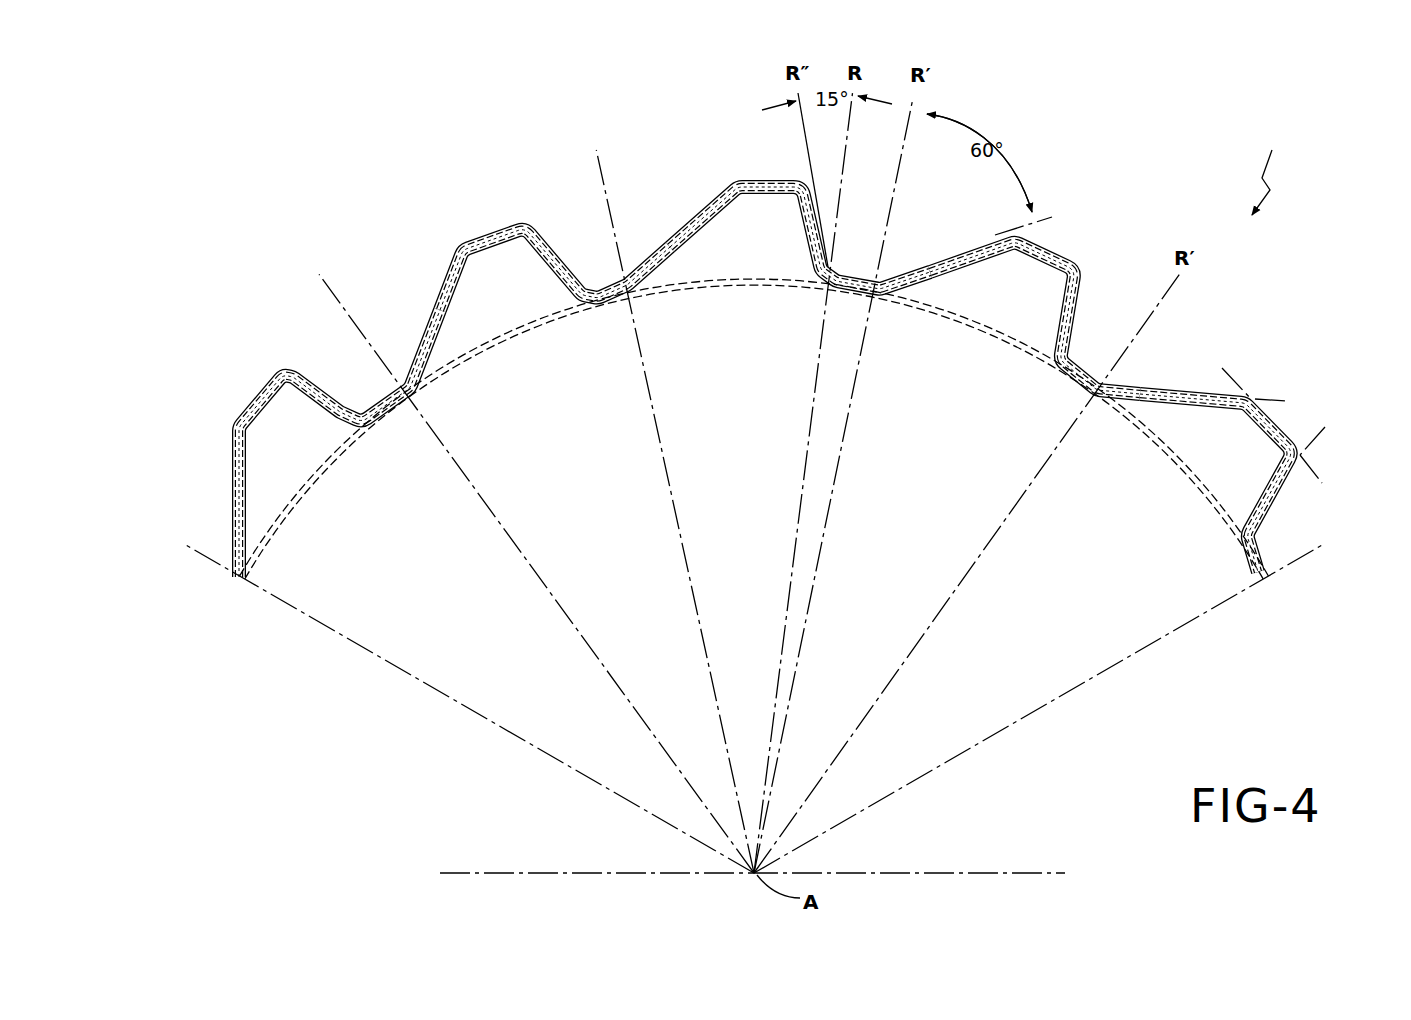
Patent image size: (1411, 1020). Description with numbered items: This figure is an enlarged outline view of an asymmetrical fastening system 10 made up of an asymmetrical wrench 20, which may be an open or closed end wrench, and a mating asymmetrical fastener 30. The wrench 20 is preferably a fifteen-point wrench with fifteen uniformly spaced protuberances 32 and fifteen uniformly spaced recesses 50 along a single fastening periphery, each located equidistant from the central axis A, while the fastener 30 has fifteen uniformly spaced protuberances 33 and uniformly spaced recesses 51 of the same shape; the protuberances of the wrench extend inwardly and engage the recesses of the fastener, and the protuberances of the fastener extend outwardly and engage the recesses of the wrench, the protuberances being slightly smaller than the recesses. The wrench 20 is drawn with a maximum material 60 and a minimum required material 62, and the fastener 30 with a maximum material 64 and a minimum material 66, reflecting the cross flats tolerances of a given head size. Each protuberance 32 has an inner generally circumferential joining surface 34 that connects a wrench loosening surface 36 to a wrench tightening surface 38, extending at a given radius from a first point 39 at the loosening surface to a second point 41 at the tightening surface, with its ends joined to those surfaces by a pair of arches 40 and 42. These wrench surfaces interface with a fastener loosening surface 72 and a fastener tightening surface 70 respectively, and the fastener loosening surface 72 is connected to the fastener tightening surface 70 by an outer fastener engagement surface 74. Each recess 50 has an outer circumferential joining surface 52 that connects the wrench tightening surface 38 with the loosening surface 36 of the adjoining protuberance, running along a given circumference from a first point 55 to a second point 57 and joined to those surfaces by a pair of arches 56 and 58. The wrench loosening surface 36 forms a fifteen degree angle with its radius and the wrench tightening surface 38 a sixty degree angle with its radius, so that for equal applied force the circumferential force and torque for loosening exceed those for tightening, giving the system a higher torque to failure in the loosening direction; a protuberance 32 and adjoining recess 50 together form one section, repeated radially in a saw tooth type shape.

The asymmetrical fastening system 10 is at (1271, 166).
The asymmetrical wrench 20 is at (346, 212).
The asymmetrical fastener 30 is at (501, 400).
The protuberance 32 is at (576, 247).
The protuberance 33 is at (486, 302).
The inner generally circumferential joining surface 34 is at (852, 283).
The wrench loosening surface 36 is at (818, 205).
The wrench tightening surface 38 is at (952, 256).
The first point 39 is at (832, 278).
The arch 40 is at (832, 273).
The second point 41 is at (895, 288).
The arch 42 is at (878, 280).
The recess 50 is at (468, 217).
The recess 51 is at (598, 335).
The outer circumferential joining surface 52 is at (1043, 243).
The first point 55 is at (1248, 400).
The arch 56 is at (1010, 232).
The second point 57 is at (1300, 456).
The arch 58 is at (1080, 268).
The maximum material 60 is at (236, 520).
The minimum required material 62 is at (232, 465).
The maximum material 64 is at (243, 478).
The minimum material 66 is at (232, 508).
The fastener tightening surface 70 is at (668, 263).
The fastener loosening surface 72 is at (808, 243).
The outer fastener engagement surface 74 is at (760, 198).